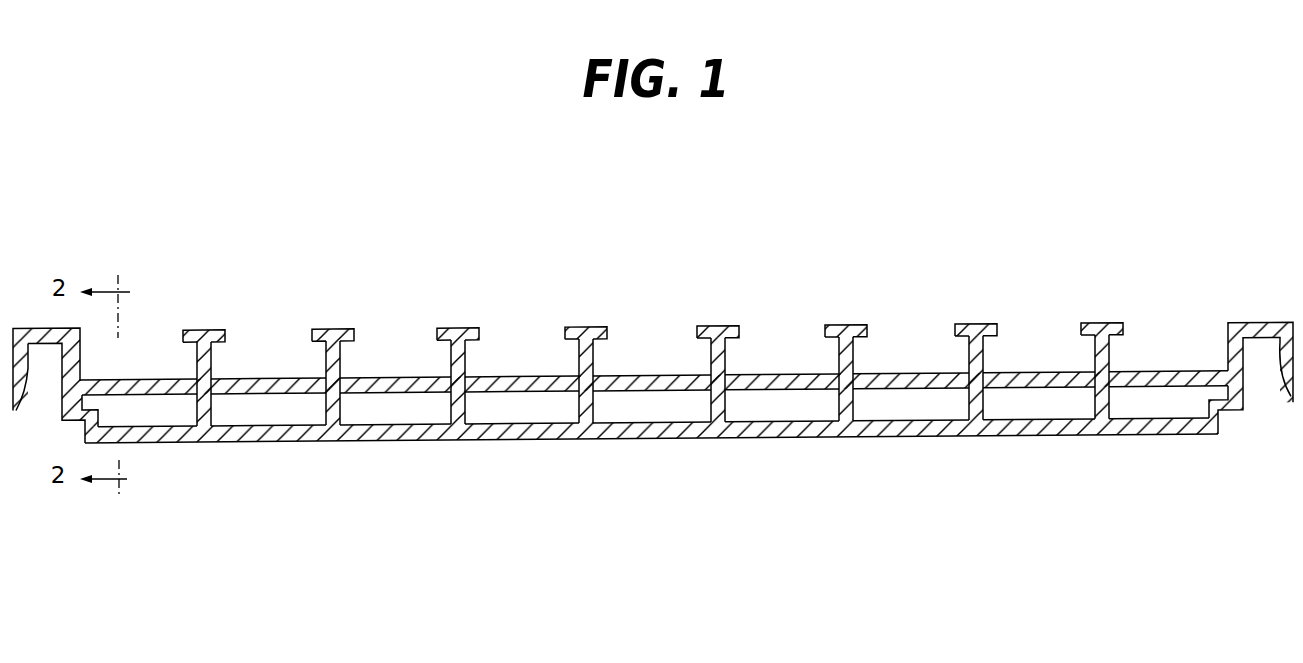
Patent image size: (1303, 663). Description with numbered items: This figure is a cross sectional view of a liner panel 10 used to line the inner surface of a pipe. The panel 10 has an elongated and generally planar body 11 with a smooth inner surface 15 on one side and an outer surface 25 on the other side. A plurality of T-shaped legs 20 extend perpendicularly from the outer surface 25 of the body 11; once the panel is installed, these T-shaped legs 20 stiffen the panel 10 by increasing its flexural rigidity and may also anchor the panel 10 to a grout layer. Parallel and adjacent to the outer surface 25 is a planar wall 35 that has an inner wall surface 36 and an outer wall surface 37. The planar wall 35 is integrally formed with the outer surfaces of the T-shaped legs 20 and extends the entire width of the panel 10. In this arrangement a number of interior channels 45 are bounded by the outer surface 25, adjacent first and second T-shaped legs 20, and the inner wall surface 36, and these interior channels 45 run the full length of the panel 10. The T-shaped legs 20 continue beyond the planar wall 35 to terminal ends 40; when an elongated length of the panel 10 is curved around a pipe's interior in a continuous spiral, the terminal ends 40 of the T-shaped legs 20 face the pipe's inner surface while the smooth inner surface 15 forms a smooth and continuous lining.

The panel 10 is at (1189, 287).
The body 11 is at (260, 443).
The inner surface 15 is at (333, 440).
The T-shaped legs 20 is at (358, 336).
The outer surface 25 is at (907, 418).
The planar wall 35 is at (605, 376).
The inner wall surface 36 is at (214, 424).
The outer wall surface 37 is at (228, 379).
The terminal ends 40 is at (320, 332).
The interior channels 45 is at (502, 408).